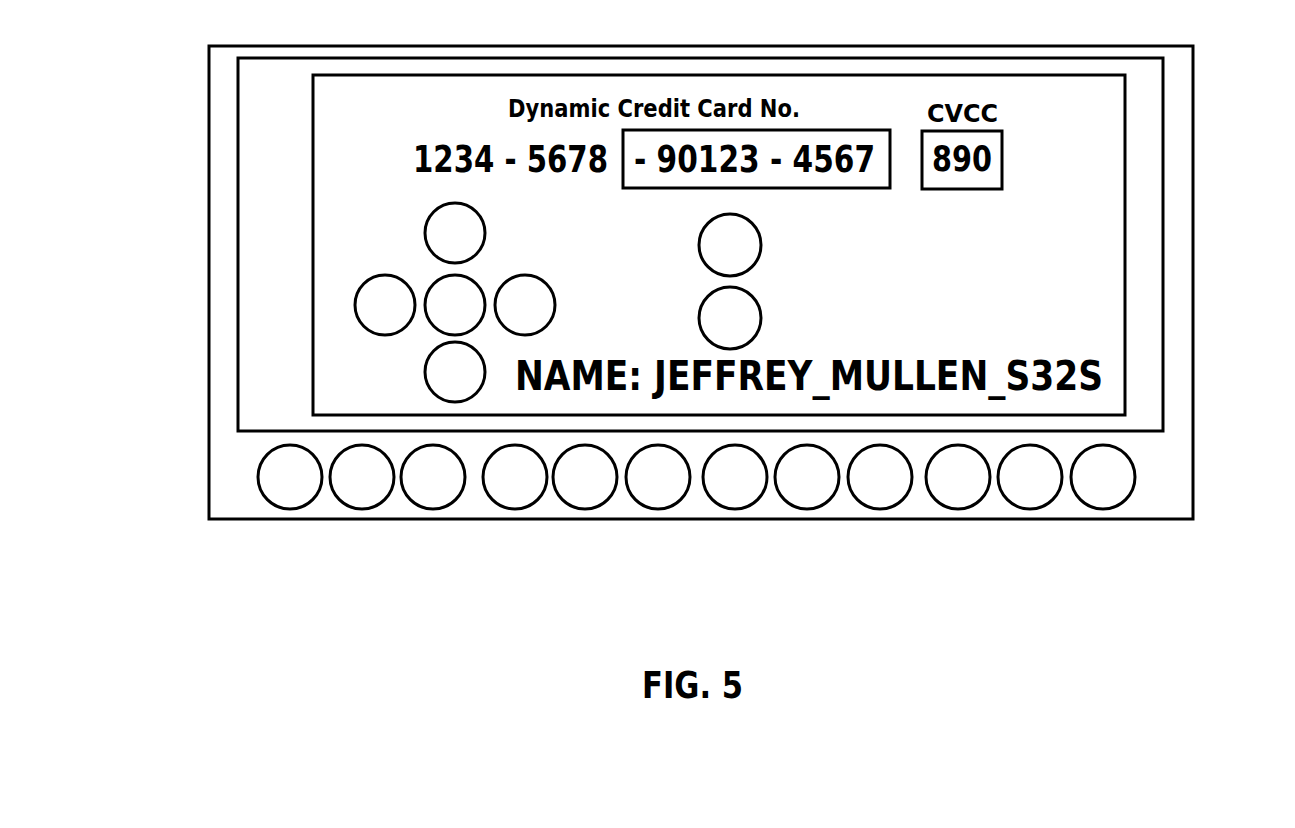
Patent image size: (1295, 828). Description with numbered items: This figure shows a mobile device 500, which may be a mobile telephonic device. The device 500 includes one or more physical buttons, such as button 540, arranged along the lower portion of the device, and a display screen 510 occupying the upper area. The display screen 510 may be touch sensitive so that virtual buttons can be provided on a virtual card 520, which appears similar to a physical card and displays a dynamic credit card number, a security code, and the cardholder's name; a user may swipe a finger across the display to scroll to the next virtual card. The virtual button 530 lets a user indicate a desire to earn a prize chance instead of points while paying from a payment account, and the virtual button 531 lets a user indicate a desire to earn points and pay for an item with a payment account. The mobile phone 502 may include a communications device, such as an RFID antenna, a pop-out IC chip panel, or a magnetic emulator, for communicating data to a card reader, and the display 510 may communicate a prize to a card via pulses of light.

The mobile device 500 is at (1262, 288).
The mobile phone 502 is at (209, 196).
The display screen 510 is at (240, 107).
The virtual card 520 is at (313, 303).
The virtual button 530 is at (700, 242).
The virtual button 531 is at (700, 315).
The button 540 is at (260, 473).